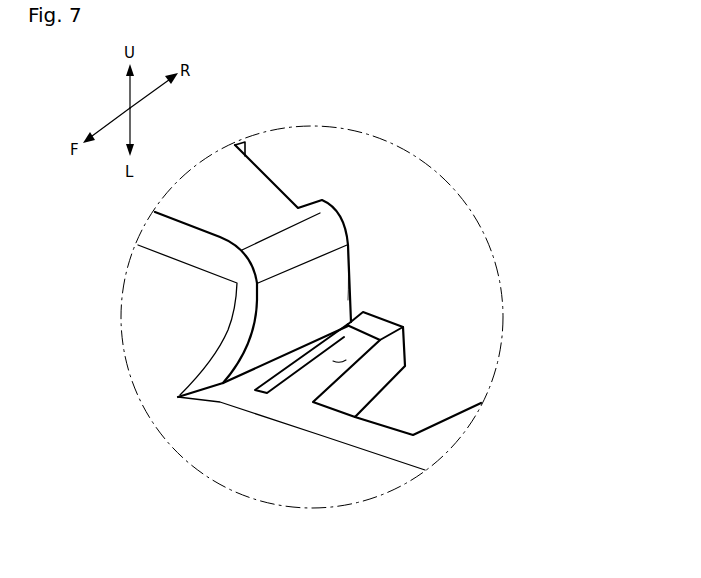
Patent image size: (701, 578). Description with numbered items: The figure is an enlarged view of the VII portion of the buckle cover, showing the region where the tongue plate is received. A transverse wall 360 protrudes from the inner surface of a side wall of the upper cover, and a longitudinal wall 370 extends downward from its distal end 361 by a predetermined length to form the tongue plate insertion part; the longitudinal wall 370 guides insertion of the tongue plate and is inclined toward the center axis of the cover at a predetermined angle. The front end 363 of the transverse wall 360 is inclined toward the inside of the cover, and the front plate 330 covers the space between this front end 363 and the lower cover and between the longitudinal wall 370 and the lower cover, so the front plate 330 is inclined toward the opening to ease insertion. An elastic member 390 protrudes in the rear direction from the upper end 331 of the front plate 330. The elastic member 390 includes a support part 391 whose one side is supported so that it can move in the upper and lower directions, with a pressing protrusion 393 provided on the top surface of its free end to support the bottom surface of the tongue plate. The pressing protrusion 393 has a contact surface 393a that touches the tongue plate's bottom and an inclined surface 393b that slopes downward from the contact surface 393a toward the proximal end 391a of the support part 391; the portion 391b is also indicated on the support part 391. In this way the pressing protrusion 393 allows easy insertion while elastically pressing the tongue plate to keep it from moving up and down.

The front plate 330 is at (192, 428).
The upper end of the front plate 331 is at (360, 424).
The transverse wall 360 is at (248, 195).
The distal end of the transverse wall 361 is at (302, 300).
The front end of the transverse wall 363 is at (182, 240).
The longitudinal wall 370 is at (349, 243).
The elastic member 390 is at (383, 358).
The support part 391 is at (363, 384).
The proximal end of the support part 391a is at (304, 405).
The plate bridge portion 391b is at (340, 362).
The pressing protrusion 393 is at (474, 323).
The contact surface 393a is at (372, 325).
The inclined surface 393b is at (358, 347).
The VII portion VII is at (452, 178).